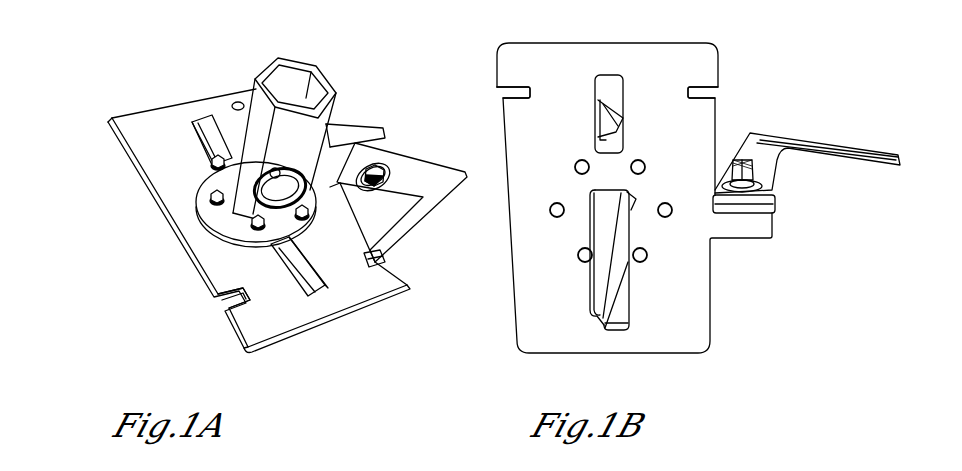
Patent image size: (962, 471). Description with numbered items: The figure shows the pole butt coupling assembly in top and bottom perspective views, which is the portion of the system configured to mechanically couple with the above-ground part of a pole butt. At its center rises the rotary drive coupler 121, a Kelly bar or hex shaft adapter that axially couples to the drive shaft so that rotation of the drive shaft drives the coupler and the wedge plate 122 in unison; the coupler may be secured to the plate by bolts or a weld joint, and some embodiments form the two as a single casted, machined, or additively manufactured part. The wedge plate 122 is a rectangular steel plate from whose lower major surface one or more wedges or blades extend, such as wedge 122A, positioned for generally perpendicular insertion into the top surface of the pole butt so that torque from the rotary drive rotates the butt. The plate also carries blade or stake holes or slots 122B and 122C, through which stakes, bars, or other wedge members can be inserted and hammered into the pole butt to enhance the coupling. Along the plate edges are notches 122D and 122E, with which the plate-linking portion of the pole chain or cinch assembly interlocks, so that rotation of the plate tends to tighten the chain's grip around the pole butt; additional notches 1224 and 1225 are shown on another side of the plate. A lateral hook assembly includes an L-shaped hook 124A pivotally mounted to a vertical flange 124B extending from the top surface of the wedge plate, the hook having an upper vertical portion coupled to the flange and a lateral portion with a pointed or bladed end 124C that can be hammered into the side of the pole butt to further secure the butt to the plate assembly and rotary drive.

In FIG. 1A, the rotary drive coupler 121 is at (297, 58).
In FIG. 1A, the wedge plate 122 is at (110, 118).
In FIG. 1B, the wedge 122A is at (593, 283).
In FIG. 1A, the stake slot 122B is at (205, 133).
In FIG. 1B, the stake slot 122B is at (608, 325).
In FIG. 1A, the slot / tab 122C is at (310, 285).
In FIG. 1B, the slot / tab 122C is at (610, 82).
In FIG. 1A, the notch 122D is at (228, 304).
In FIG. 1A, the notch 122E is at (388, 259).
In FIG. 1B, the notch 1224 is at (505, 92).
In FIG. 1B, the notch 1225 is at (713, 93).
In FIG. 1A, the L-shaped hook 124A is at (397, 163).
In FIG. 1B, the L-shaped hook 124A is at (765, 145).
In FIG. 1A, the vertical flange 124B is at (353, 121).
In FIG. 1B, the vertical flange 124B is at (772, 206).
In FIG. 1B, the pointed end 124C is at (869, 140).